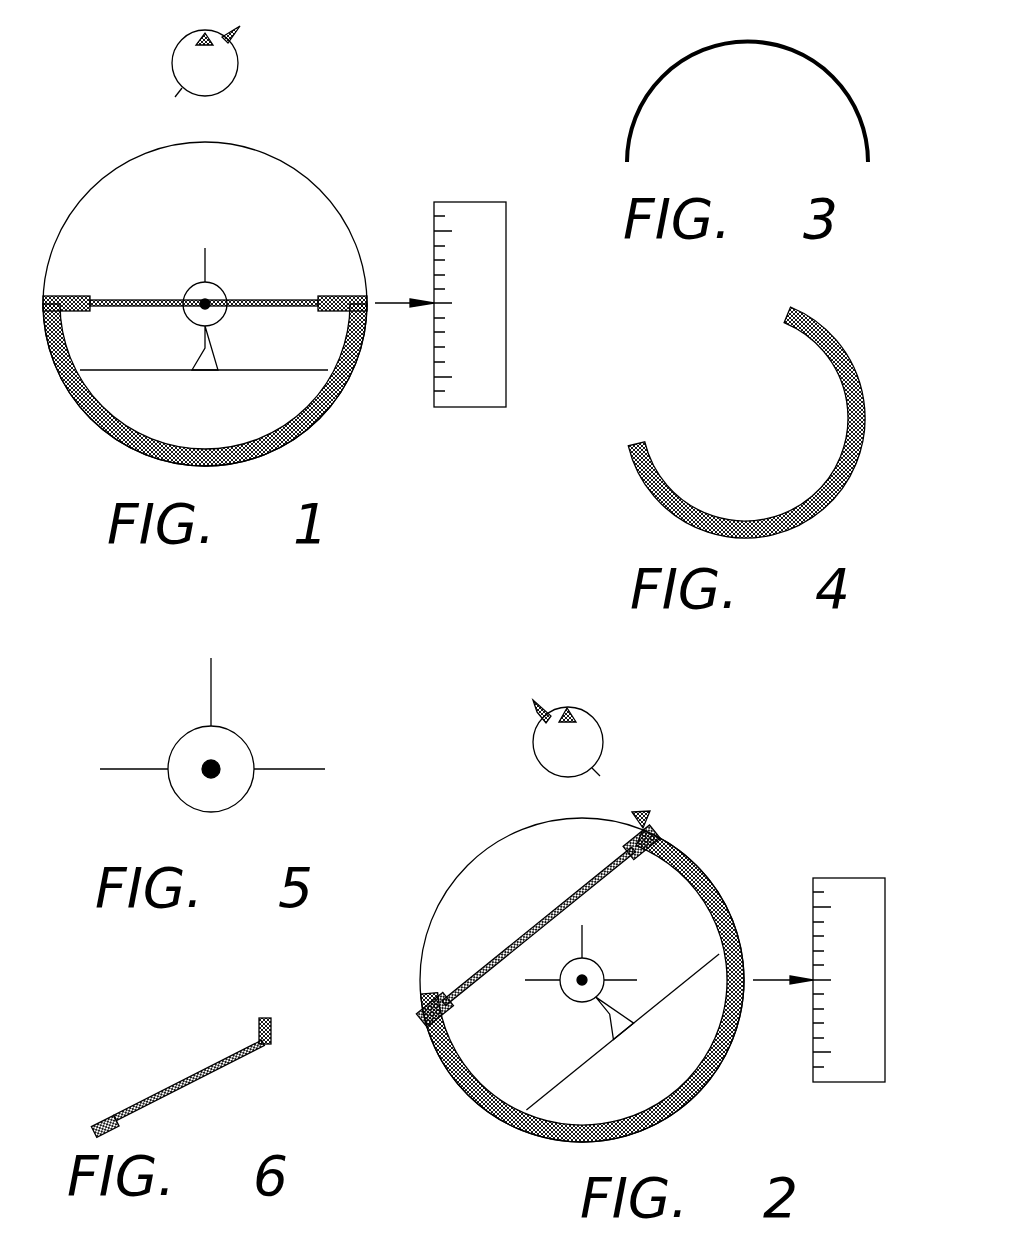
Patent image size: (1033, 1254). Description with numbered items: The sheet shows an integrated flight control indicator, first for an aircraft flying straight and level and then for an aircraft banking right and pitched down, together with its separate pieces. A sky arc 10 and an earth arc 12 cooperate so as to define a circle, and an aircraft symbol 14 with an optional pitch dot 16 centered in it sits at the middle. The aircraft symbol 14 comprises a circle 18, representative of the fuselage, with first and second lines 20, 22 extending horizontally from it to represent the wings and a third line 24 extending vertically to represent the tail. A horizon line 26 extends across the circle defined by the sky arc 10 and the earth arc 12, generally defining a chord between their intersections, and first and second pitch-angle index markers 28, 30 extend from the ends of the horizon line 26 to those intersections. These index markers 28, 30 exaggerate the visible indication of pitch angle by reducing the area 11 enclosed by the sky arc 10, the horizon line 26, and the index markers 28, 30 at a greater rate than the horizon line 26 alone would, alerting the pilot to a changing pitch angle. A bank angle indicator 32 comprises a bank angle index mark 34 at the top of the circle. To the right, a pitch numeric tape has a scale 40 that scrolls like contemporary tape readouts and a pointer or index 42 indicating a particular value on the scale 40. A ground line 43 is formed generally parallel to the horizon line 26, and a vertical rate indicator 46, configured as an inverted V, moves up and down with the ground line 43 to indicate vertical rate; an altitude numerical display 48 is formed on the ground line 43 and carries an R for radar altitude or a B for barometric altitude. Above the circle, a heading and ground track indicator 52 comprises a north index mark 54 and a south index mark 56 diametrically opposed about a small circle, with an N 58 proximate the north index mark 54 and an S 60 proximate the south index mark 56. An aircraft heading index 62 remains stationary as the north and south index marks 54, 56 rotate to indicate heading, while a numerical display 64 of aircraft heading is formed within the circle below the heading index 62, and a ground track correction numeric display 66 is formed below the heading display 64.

In FIG. 1, the sky arc 10 is at (283, 162).
In FIG. 3, the sky arc 10 is at (665, 70).
In FIG. 2, the sky arc 10 is at (463, 878).
In FIG. 1, the area 11 is at (165, 215).
In FIG. 2, the area 11 is at (525, 893).
In FIG. 1, the earth arc 12 is at (317, 423).
In FIG. 4, the earth arc 12 is at (715, 400).
In FIG. 2, the earth arc 12 is at (695, 1095).
In FIG. 1, the aircraft symbol 14 is at (220, 290).
In FIG. 5, the aircraft symbol 14 is at (202, 730).
In FIG. 2, the aircraft symbol 14 is at (600, 965).
In FIG. 1, the pitch dot 16 is at (200, 300).
In FIG. 5, the pitch dot 16 is at (205, 765).
In FIG. 2, the pitch dot 16 is at (575, 985).
In FIG. 5, the circle 18 is at (170, 790).
In FIG. 5, the first line 20 is at (115, 767).
In FIG. 5, the second line 22 is at (300, 767).
In FIG. 5, the third line 24 is at (210, 667).
In FIG. 1, the horizon line 26 is at (120, 298).
In FIG. 6, the horizon line 26 is at (190, 1080).
In FIG. 2, the horizon line 26 is at (525, 947).
In FIG. 1, the first pitch-angle index marker 28 is at (335, 297).
In FIG. 6, the first pitch-angle index marker 28 is at (100, 1107).
In FIG. 2, the first pitch-angle index marker 28 is at (440, 1000).
In FIG. 6, the second pitch-angle index marker 30 is at (260, 1025).
In FIG. 2, the bank angle indicator 32 is at (665, 798).
In FIG. 2, the bank angle index mark 34 is at (652, 821).
In FIG. 1, the scale 40 is at (478, 202).
In FIG. 2, the scale 40 is at (857, 878).
In FIG. 1, the pointer or index 42 is at (396, 302).
In FIG. 2, the pointer or index 42 is at (773, 979).
In FIG. 1, the ground line 43 is at (137, 371).
In FIG. 2, the ground line 43 is at (570, 1078).
In FIG. 1, the vertical rate indicator 46 is at (193, 356).
In FIG. 2, the vertical rate indicator 46 is at (612, 1030).
In FIG. 1, the altitude numerical display 48 is at (258, 352).
In FIG. 2, the altitude numerical display 48 is at (672, 975).
In FIG. 1, the heading and ground track indicator 52 is at (258, 62).
In FIG. 2, the heading and ground track indicator 52 is at (569, 737).
In FIG. 2, the north index mark 54 is at (543, 710).
In FIG. 2, the south index mark 56 is at (590, 772).
In FIG. 2, the N 58 is at (517, 692).
In FIG. 2, the S 60 is at (613, 779).
In FIG. 2, the aircraft heading index 62 is at (571, 713).
In FIG. 2, the numerical display of aircraft heading 64 is at (543, 735).
In FIG. 2, the ground track correction numeric display 66 is at (547, 762).